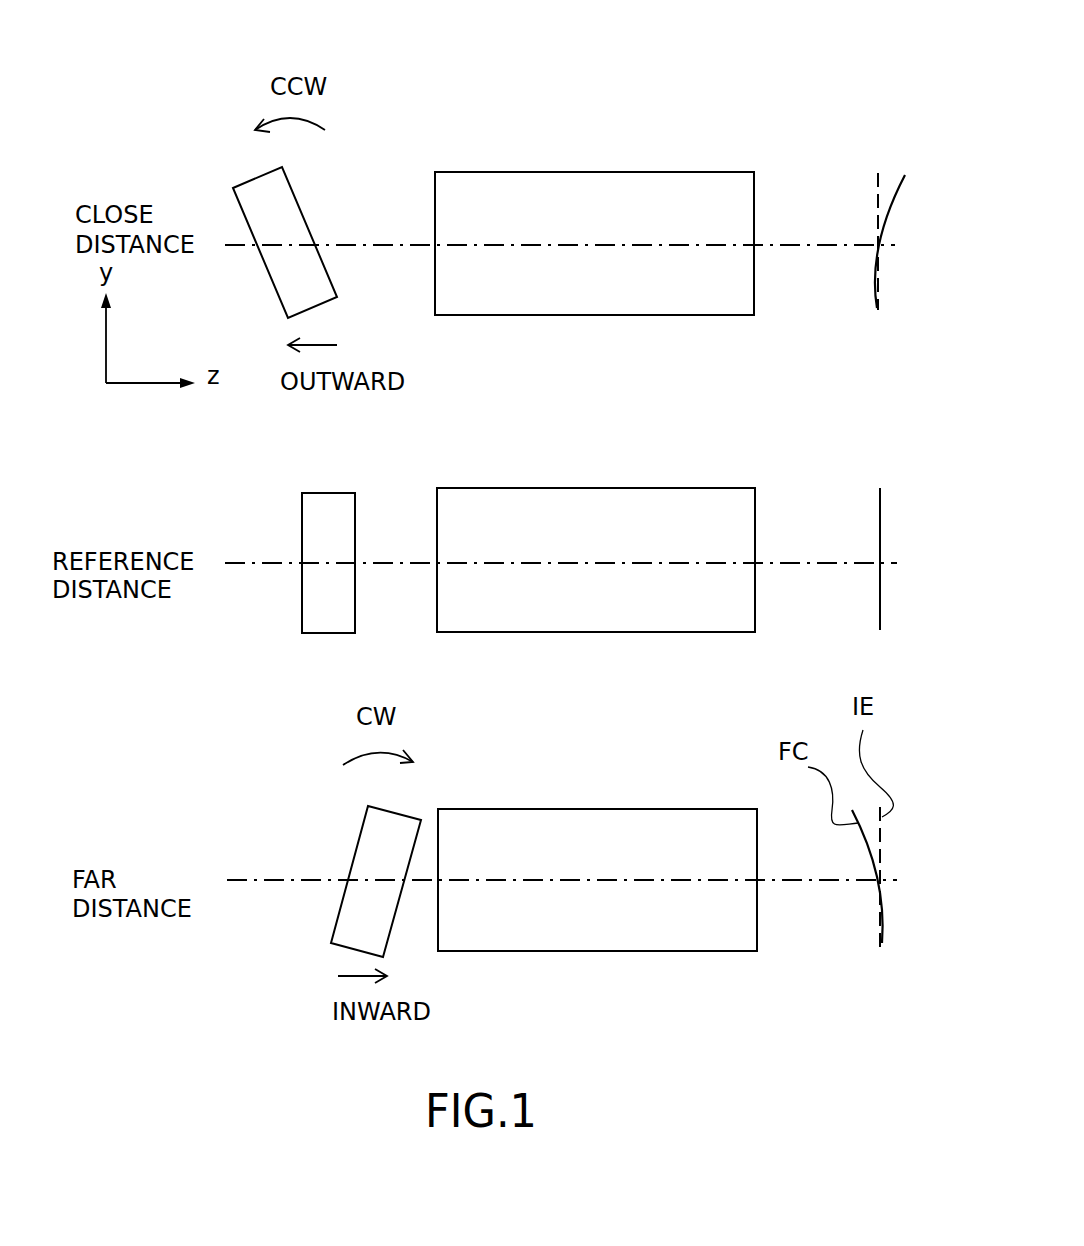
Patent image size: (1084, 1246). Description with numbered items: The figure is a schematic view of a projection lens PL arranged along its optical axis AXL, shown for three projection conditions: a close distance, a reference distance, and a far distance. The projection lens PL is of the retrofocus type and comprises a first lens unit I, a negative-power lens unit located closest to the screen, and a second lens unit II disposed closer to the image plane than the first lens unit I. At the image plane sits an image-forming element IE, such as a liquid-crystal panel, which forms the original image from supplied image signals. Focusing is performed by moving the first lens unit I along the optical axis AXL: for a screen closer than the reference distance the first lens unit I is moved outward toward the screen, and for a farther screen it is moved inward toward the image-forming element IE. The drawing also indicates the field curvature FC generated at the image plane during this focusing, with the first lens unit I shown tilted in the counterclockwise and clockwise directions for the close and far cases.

The first lens unit I is at (280, 210).
The second lens unit II is at (568, 193).
The projection lens PL is at (594, 174).
The optical axis AXL is at (397, 245).
The image-forming element IE is at (882, 183).
The field curvature FC is at (892, 203).